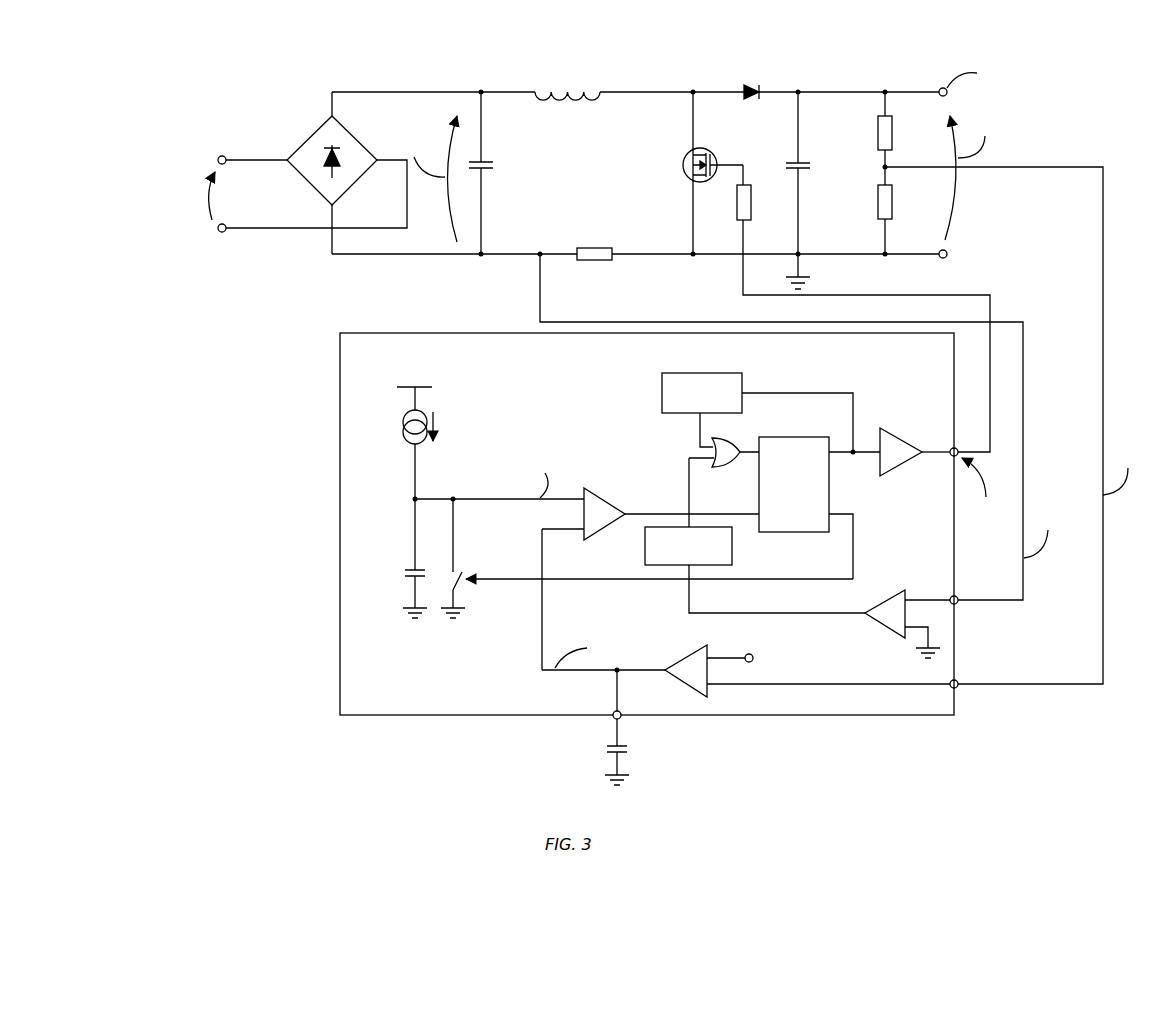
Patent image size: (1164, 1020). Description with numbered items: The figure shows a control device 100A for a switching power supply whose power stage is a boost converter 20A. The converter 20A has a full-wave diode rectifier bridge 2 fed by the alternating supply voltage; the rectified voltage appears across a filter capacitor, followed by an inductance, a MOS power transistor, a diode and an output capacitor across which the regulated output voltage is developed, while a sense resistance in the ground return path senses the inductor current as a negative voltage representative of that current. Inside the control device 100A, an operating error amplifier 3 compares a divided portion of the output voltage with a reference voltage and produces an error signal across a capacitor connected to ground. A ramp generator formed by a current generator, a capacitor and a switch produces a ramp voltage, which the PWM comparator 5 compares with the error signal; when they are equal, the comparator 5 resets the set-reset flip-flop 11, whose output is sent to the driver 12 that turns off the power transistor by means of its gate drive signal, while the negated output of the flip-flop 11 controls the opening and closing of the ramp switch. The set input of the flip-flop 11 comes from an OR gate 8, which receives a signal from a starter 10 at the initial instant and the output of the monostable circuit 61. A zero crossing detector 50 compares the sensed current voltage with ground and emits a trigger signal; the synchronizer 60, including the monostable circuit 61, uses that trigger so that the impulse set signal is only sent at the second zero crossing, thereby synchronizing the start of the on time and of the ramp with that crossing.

The converter 20A is at (458, 60).
The full-wave diode rectifier bridge 2 is at (300, 138).
The control device 100A is at (340, 404).
The starter 10 is at (700, 373).
The OR gate 8 is at (722, 465).
The set-reset flip-flop 11 is at (795, 437).
The driver 12 is at (902, 443).
The PWM comparator 5 is at (603, 527).
The synchronizer 60 is at (630, 560).
The monostable circuit 61 is at (732, 548).
The zero crossing detector 50 is at (876, 606).
The operating error amplifier 3 is at (685, 660).